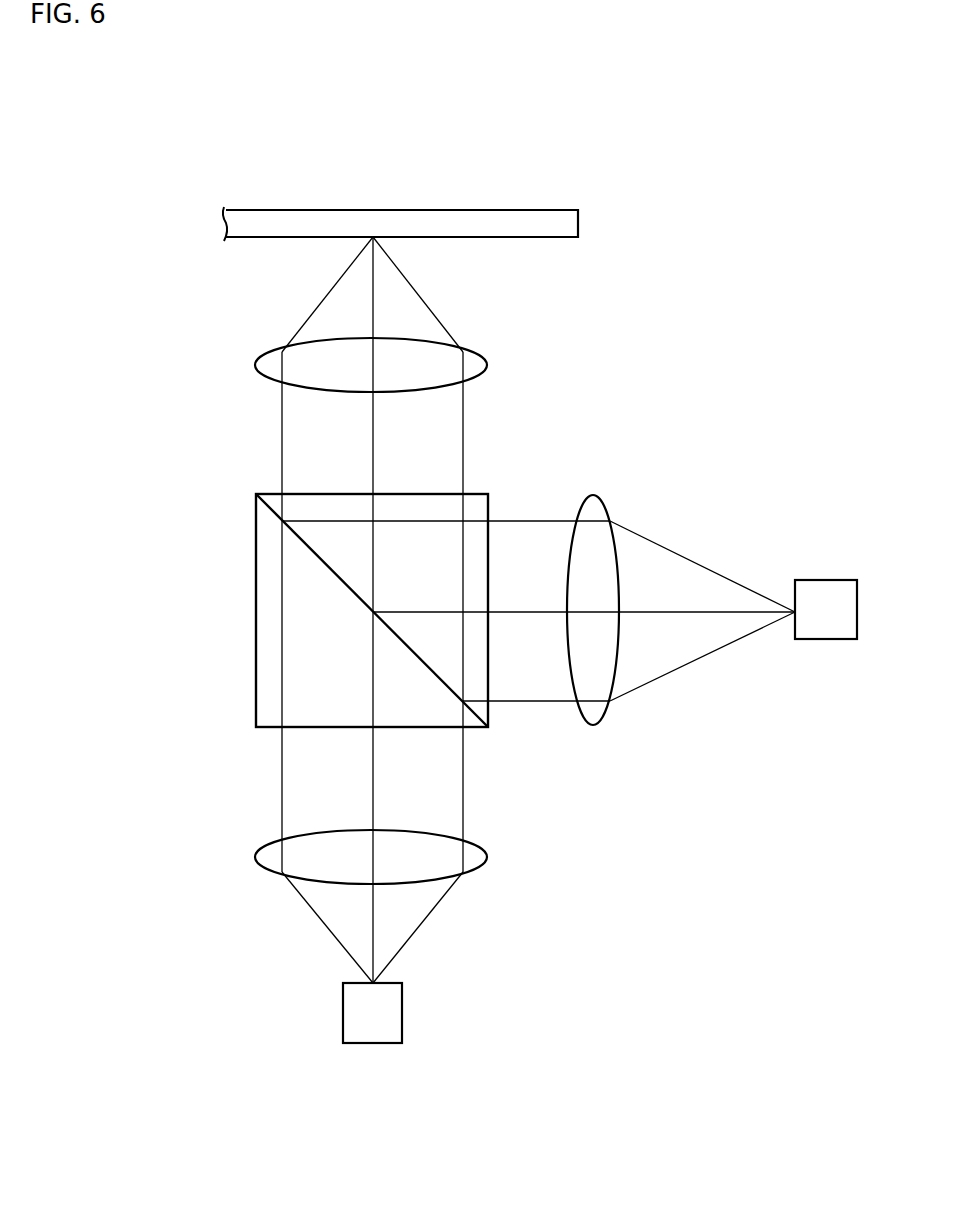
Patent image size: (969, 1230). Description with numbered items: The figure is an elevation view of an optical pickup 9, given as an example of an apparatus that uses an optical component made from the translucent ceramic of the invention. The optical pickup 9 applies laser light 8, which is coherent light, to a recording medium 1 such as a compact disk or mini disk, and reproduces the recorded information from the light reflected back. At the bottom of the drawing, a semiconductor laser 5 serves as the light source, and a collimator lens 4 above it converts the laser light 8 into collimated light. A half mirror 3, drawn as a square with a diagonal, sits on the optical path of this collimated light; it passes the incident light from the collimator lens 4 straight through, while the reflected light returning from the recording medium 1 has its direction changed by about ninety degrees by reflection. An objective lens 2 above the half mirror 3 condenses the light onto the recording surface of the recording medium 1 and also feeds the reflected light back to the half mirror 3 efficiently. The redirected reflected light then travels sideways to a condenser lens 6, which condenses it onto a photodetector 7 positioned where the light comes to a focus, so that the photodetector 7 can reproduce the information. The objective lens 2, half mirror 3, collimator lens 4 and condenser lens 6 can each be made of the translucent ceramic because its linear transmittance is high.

The optical pickup 9 is at (133, 143).
The recording medium 1 is at (578, 224).
The objective lens 2 is at (486, 366).
The half mirror 3 is at (268, 605).
The collimator lens 4 is at (486, 855).
The semiconductor laser 5 is at (402, 1015).
The condenser lens 6 is at (593, 497).
The photodetector 7 is at (827, 580).
The laser light 8 is at (282, 780).